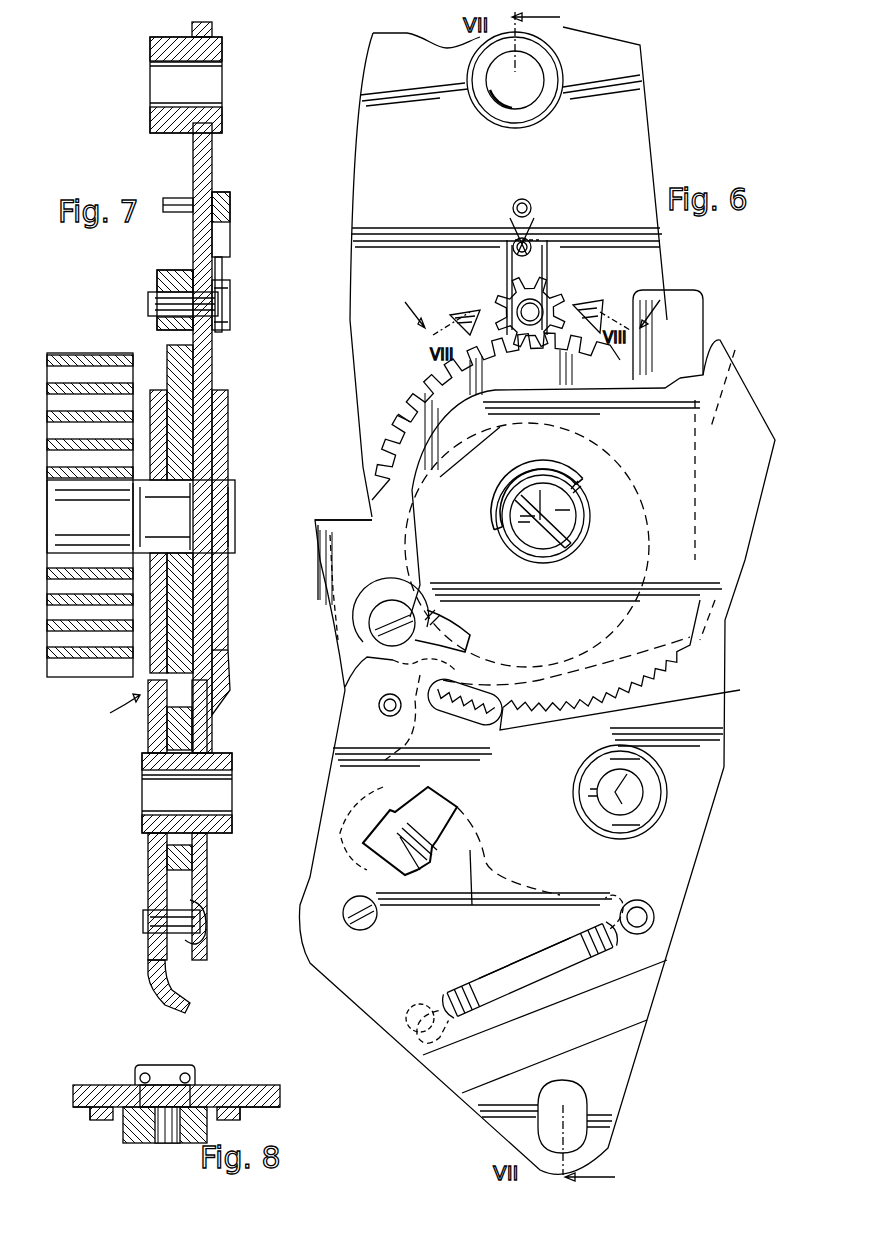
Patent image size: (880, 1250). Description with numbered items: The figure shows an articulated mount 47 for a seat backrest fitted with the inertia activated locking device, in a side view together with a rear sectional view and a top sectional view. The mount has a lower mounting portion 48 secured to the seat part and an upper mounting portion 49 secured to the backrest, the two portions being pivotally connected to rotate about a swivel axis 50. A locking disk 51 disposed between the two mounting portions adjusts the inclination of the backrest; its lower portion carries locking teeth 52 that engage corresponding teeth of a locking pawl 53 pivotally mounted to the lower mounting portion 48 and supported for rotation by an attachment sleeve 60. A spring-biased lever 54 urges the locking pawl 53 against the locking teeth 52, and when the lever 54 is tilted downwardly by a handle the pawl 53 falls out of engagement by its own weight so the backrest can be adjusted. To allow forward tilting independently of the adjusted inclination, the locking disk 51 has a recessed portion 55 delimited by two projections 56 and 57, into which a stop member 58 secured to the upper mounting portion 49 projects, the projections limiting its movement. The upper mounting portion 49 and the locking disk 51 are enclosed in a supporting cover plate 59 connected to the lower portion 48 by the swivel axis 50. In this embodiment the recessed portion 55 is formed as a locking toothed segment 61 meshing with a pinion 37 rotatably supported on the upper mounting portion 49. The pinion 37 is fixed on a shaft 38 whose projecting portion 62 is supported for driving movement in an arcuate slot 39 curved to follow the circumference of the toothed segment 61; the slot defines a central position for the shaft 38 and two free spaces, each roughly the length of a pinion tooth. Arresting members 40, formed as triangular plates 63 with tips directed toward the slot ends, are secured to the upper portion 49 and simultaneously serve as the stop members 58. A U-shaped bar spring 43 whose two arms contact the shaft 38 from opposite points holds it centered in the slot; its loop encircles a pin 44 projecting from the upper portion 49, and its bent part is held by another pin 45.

In FIG. 6, the pinion 37 is at (522, 282).
In FIG. 7, the pinion 37 is at (175, 265).
In FIG. 6, the shaft 38 is at (508, 293).
In FIG. 7, the shaft 38 is at (150, 305).
In FIG. 8, the shaft 38 is at (165, 1140).
In FIG. 6, the arcuate slot 39 is at (563, 302).
In FIG. 8, the arcuate slot 39 is at (192, 1097).
In FIG. 6, the arresting members 40 is at (473, 300).
In FIG. 8, the arresting members 40 is at (83, 1115).
In FIG. 6, the bar spring 43 is at (540, 213).
In FIG. 7, the bar spring 43 is at (224, 275).
In FIG. 8, the bar spring 43 is at (190, 1080).
In FIG. 6, the pin 44 is at (522, 199).
In FIG. 7, the pin 44 is at (190, 200).
In FIG. 6, the pin 45 is at (515, 243).
In FIG. 7, the pin 45 is at (230, 243).
In FIG. 6, the articulated mount 47 is at (740, 585).
In FIG. 7, the articulated mount 47 is at (113, 713).
In FIG. 6, the lower mounting portion 48 is at (668, 890).
In FIG. 7, the lower mounting portion 48 is at (170, 1000).
In FIG. 6, the upper mounting portion 49 is at (622, 147).
In FIG. 7, the upper mounting portion 49 is at (205, 170).
In FIG. 8, the upper mounting portion 49 is at (260, 1095).
In FIG. 6, the swivel axis 50 is at (585, 508).
In FIG. 7, the swivel axis 50 is at (220, 513).
In FIG. 6, the locking disk 51 is at (400, 450).
In FIG. 7, the locking disk 51 is at (180, 392).
In FIG. 6, the locking teeth 52 is at (468, 690).
In FIG. 6, the locking pawl 53 is at (410, 740).
In FIG. 7, the locking pawl 53 is at (178, 728).
In FIG. 6, the spring-biased lever 54 is at (352, 820).
In FIG. 6, the recessed portion 55 is at (425, 375).
In FIG. 6, the projection 56 is at (340, 520).
In FIG. 6, the projection 57 is at (655, 295).
In FIG. 6, the stop member 58 is at (468, 345).
In FIG. 6, the supporting cover plate 59 is at (700, 700).
In FIG. 7, the supporting cover plate 59 is at (218, 647).
In FIG. 6, the attachment sleeve 60 is at (670, 800).
In FIG. 7, the attachment sleeve 60 is at (148, 760).
In FIG. 6, the locking toothed segment 61 is at (388, 410).
In FIG. 7, the projecting portion 62 is at (232, 315).
In FIG. 8, the projecting portion 62 is at (148, 1095).
In FIG. 8, the triangular plates 63 is at (100, 1118).